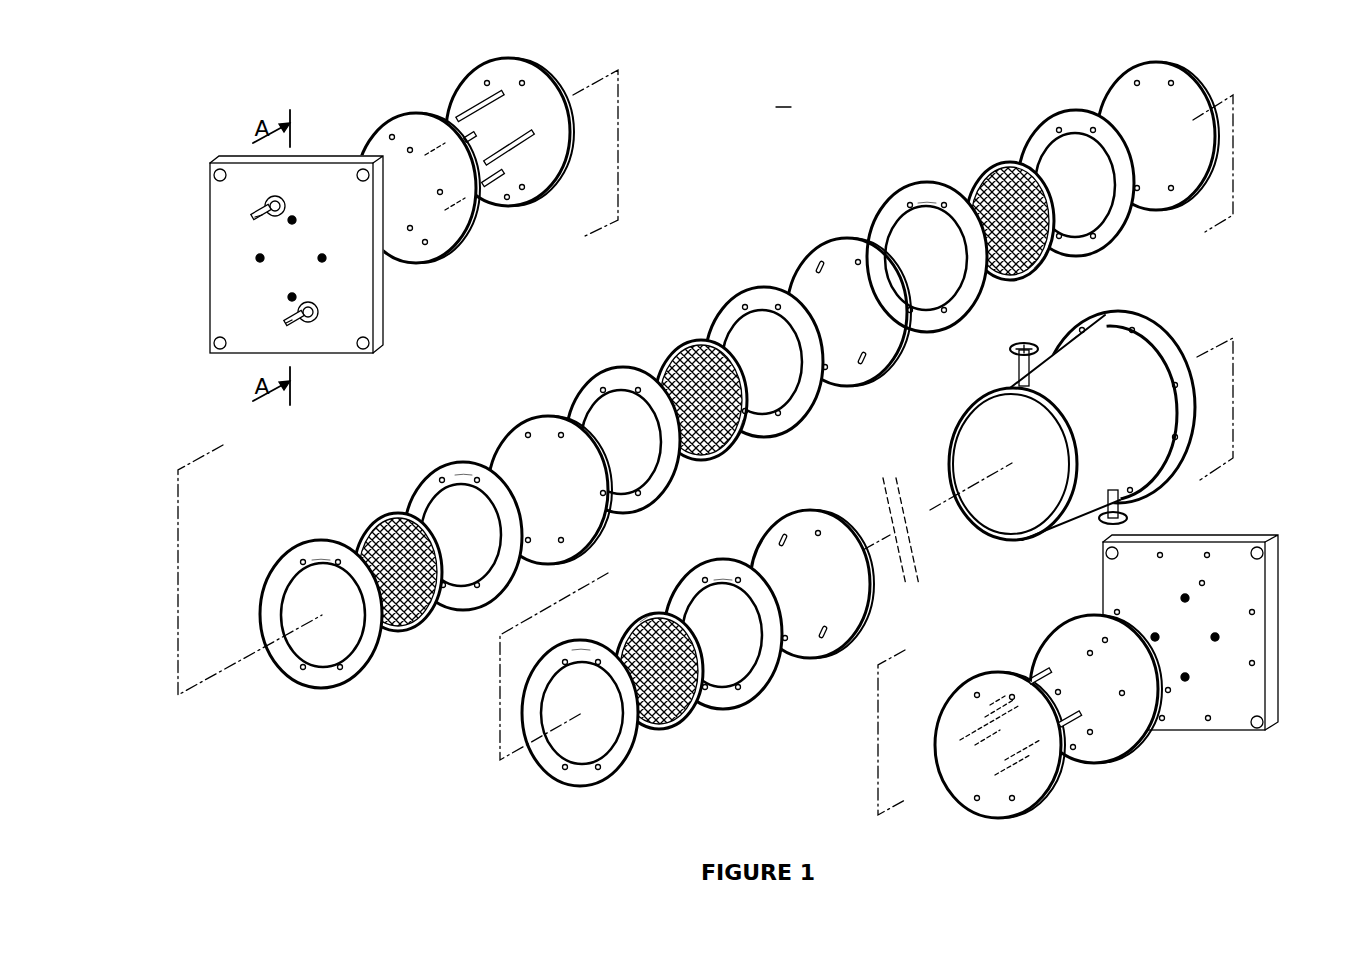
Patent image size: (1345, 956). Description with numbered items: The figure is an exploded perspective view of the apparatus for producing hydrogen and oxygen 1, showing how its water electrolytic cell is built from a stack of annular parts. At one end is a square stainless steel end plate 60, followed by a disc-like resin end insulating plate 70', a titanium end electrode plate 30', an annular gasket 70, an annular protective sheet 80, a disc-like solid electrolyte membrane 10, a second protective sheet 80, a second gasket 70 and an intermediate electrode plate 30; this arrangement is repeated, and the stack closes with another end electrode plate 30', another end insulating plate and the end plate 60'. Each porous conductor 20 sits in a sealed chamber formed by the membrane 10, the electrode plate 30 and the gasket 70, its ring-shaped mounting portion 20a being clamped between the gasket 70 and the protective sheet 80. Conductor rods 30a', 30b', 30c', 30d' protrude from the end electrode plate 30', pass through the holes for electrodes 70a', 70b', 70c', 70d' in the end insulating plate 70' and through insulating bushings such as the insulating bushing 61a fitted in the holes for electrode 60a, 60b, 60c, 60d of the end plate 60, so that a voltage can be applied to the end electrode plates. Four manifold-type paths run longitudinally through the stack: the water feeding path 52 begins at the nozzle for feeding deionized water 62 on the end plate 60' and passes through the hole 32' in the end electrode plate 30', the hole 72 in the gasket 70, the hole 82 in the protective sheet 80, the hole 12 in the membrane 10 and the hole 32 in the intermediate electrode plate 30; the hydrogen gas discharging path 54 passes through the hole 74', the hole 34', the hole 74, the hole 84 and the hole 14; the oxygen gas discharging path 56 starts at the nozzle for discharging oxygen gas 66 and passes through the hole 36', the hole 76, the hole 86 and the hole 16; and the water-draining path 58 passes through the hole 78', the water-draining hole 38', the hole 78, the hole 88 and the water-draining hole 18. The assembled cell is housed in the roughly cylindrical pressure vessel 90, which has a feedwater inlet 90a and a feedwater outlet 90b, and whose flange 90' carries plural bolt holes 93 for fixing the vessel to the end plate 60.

The apparatus for producing hydrogen and oxygen 1 is at (767, 160).
The solid electrolyte membrane 10 is at (1203, 119).
The hole for feeding deionized water 12 is at (1171, 191).
The hole for discharging hydrogen gas 14 is at (1208, 160).
The hole for discharging oxygen gas 16 is at (1134, 83).
The water-draining hole 18 is at (1137, 191).
The porous conductor 20 is at (1006, 164).
The ring-shaped mounting portion 20a is at (1045, 256).
The intermediate electrode plate 30 is at (830, 425).
The hole for feeding deionized water 32 is at (825, 450).
The end electrode plate 30' is at (732, 460).
The conductor rod 30a' is at (754, 384).
The conductor rod 30b' is at (749, 416).
The conductor rod 30c' is at (751, 459).
The conductor rod 30d' is at (795, 465).
The hole for feeding deionized water 32' is at (799, 451).
The hole for discharging hydrogen gas 34' is at (755, 435).
The hole for discharging oxygen gas 36' is at (700, 376).
The water-draining hole 38' is at (742, 509).
The water feeding path 52 is at (290, 321).
The hydrogen gas discharging path 54 is at (1262, 548).
The oxygen gas discharging path 56 is at (255, 217).
The water-draining path 58 is at (1171, 690).
The end plate 60 is at (1190, 601).
The end plate 60' is at (296, 215).
The hole for electrode 60a is at (1189, 598).
The hole for electrode 60b is at (1159, 637).
The hole for electrode 60c is at (1189, 677).
The hole for electrode 60d is at (1219, 637).
The insulating bushing 61a is at (1205, 583).
The nozzle for feeding deionized water 62 is at (302, 330).
The nozzle for discharging oxygen gas 66 is at (266, 203).
The annular gasket 70 is at (612, 431).
The end insulating plate 70' is at (1081, 659).
The hole for electrode 70a' is at (1171, 717).
The hole for electrode 70b' is at (1175, 747).
The hole for electrode 70c' is at (1138, 776).
The hole for electrode 70d' is at (1165, 700).
The hole 72 is at (945, 313).
The hole 74 is at (631, 357).
The hole 74' is at (1082, 595).
The hole 76 is at (910, 208).
The hole 78 is at (605, 529).
The hole 78' is at (1100, 784).
The annular protective sheet 80 is at (1066, 120).
The hole 82 is at (477, 588).
The hole 84 is at (470, 478).
The hole 86 is at (603, 388).
The hole 88 is at (443, 588).
The pressure vessel 90 is at (1075, 402).
The flange 90' is at (1140, 401).
The feedwater inlet 90a is at (1124, 507).
The feedwater outlet 90b is at (1023, 342).
The bolt hole 93 is at (1178, 438).